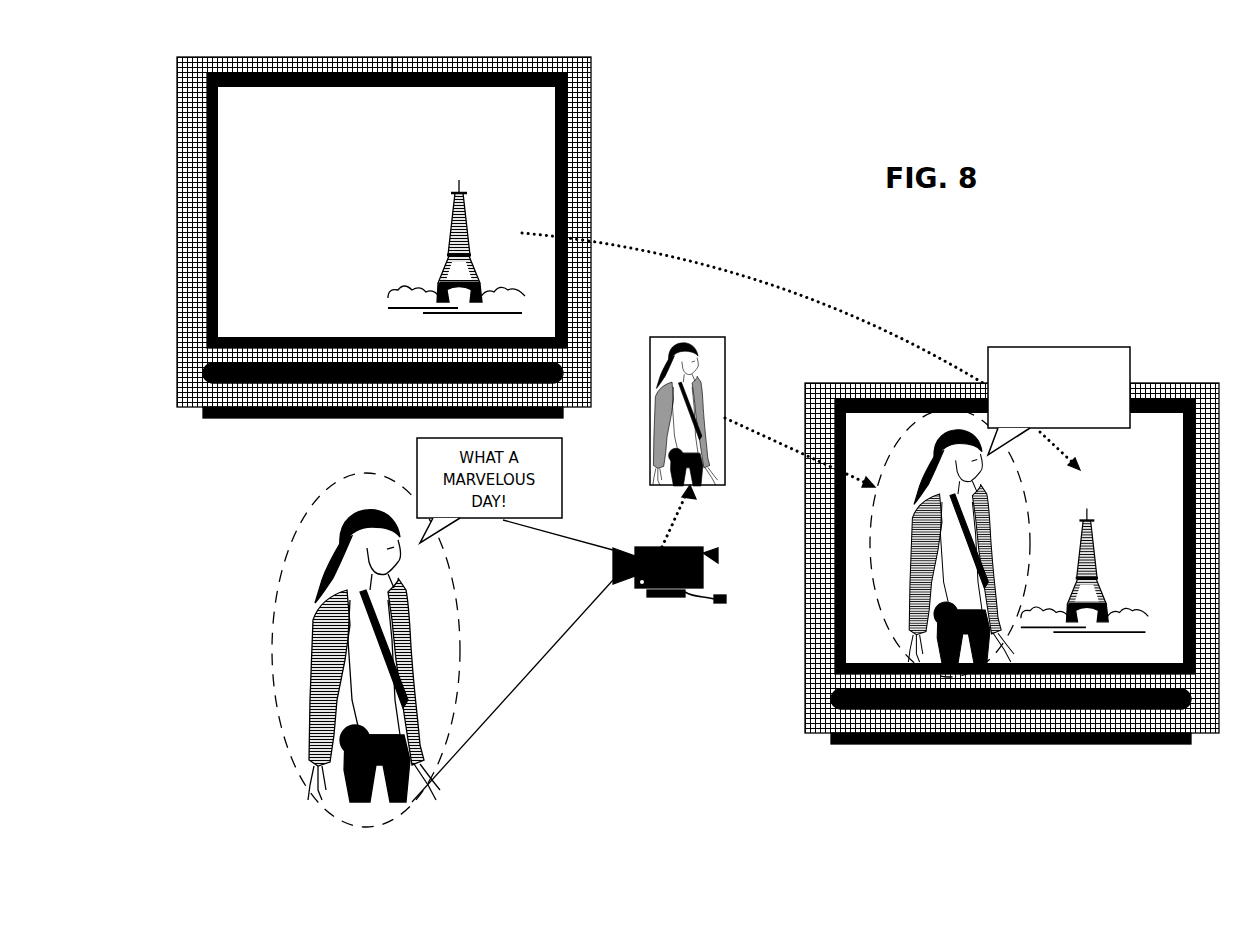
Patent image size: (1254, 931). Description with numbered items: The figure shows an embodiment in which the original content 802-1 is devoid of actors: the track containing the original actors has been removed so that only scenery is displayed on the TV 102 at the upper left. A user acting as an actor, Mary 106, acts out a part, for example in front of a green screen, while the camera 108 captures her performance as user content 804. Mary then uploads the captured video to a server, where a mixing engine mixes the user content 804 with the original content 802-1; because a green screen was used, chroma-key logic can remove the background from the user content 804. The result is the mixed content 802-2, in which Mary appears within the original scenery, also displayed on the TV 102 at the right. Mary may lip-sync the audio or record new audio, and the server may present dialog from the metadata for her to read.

The TV 102 is at (590, 217).
The Mary 106 is at (315, 640).
The camera 108 is at (670, 593).
The original content 802-1 is at (530, 173).
The mixed content 802-2 is at (1137, 447).
The user content 804 is at (658, 337).